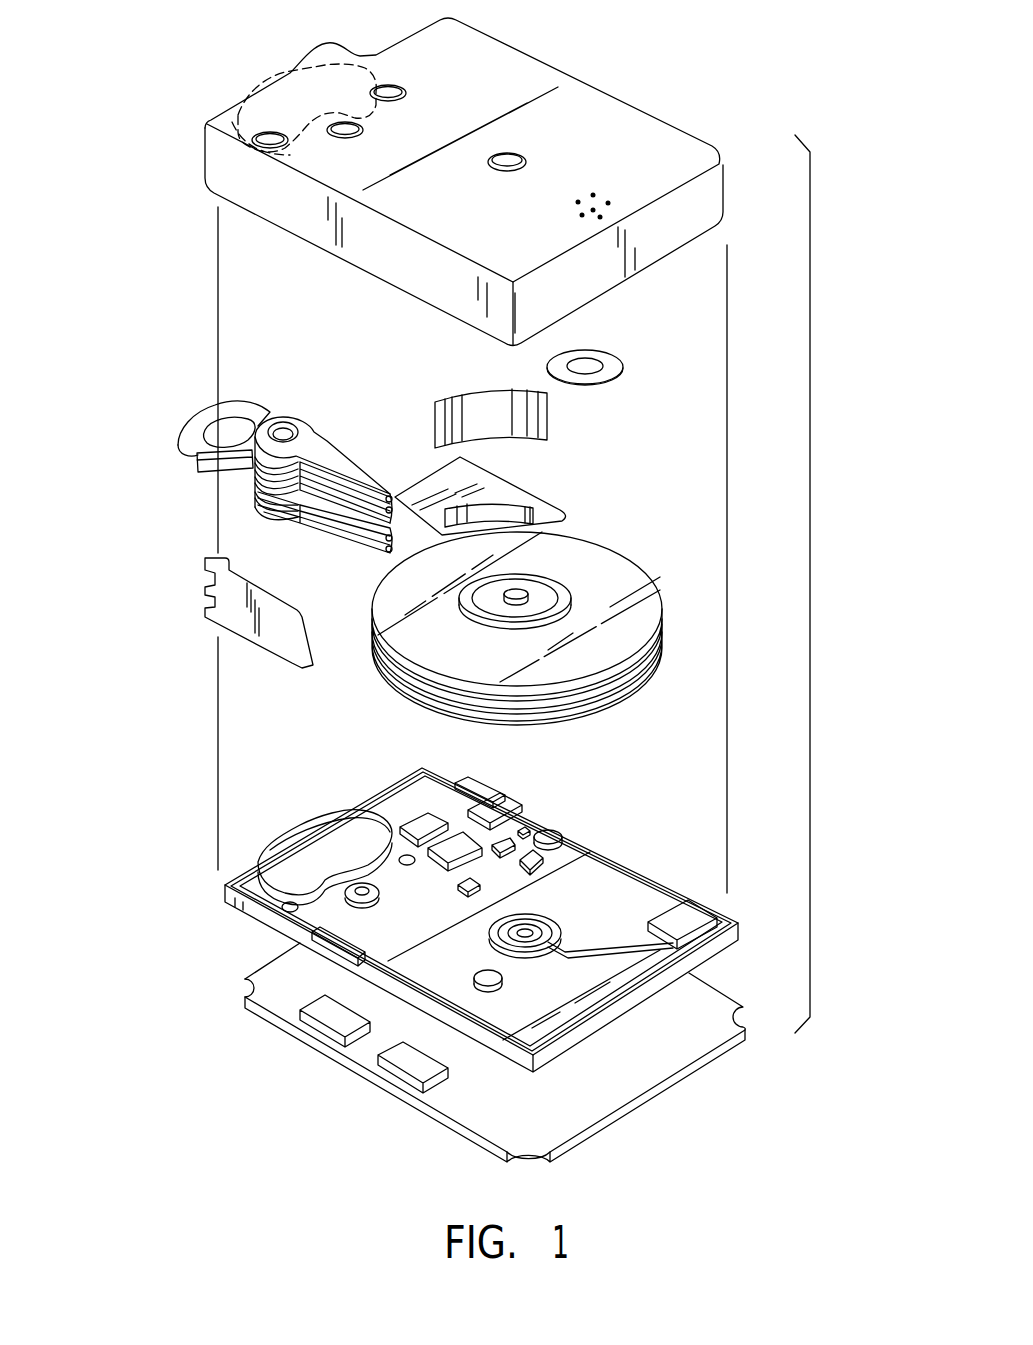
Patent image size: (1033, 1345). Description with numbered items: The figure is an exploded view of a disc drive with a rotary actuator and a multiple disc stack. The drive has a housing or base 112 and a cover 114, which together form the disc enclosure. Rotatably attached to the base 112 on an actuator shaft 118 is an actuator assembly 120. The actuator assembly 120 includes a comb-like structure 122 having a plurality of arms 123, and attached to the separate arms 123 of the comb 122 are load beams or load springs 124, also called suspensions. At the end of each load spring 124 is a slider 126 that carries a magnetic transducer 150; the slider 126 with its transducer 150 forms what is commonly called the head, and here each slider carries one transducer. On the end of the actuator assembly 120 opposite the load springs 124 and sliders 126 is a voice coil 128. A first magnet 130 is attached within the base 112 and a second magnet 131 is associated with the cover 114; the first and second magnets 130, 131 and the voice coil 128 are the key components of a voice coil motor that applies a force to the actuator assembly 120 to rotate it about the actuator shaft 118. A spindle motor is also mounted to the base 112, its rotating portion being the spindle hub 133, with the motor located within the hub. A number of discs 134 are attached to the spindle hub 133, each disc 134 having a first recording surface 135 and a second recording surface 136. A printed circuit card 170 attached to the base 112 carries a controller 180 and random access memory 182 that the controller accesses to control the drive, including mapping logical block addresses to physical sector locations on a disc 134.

The base 112 is at (633, 892).
The cover 114 is at (613, 123).
The actuator shaft 118 is at (287, 424).
The actuator assembly 120 is at (242, 476).
The comb-like structure 122 is at (307, 525).
The arms 123 is at (327, 440).
The load springs 124 is at (348, 452).
The slider 126 is at (390, 494).
The voice coil 128 is at (198, 430).
The first magnet 130 is at (305, 73).
The second magnet 131 is at (284, 848).
The spindle hub 133 is at (527, 582).
The discs 134 is at (632, 577).
The first recording surface 135 is at (626, 612).
The second recording surface 136 is at (615, 660).
The magnetic transducer 150 is at (403, 503).
The printed circuit card 170 is at (645, 1100).
The controller 180 is at (330, 1018).
The random access memory 182 is at (408, 1062).